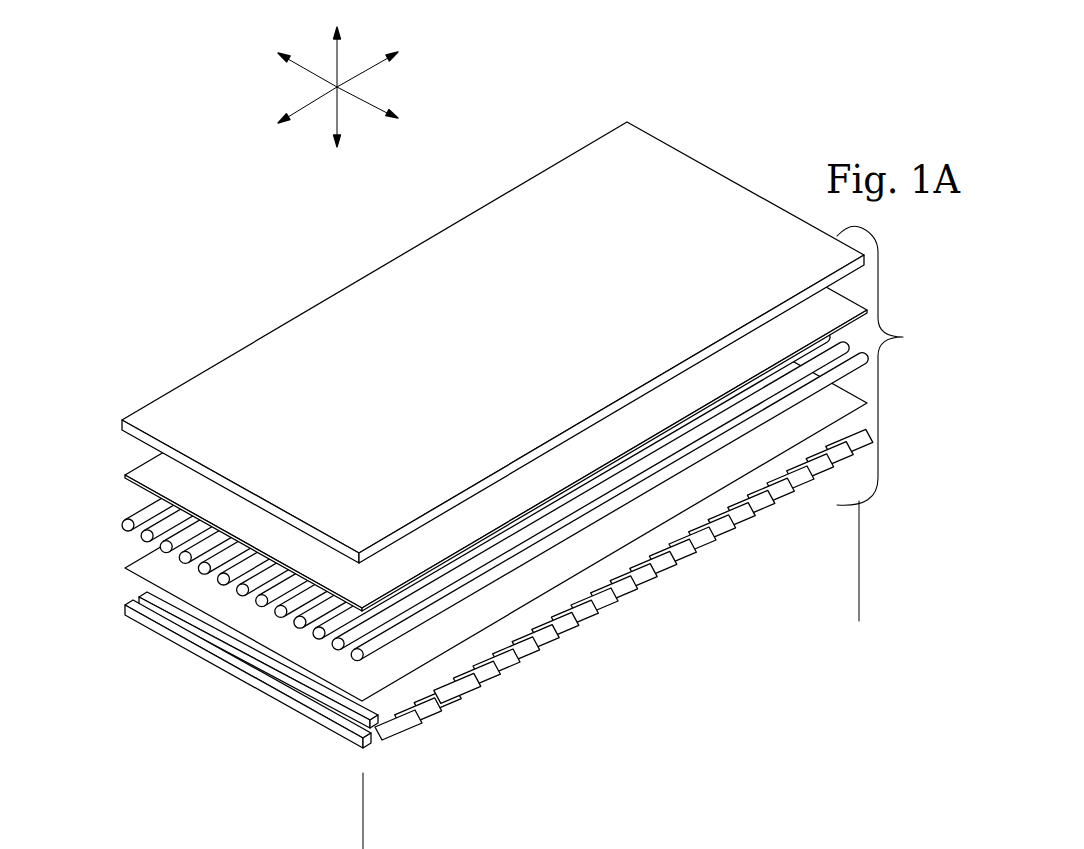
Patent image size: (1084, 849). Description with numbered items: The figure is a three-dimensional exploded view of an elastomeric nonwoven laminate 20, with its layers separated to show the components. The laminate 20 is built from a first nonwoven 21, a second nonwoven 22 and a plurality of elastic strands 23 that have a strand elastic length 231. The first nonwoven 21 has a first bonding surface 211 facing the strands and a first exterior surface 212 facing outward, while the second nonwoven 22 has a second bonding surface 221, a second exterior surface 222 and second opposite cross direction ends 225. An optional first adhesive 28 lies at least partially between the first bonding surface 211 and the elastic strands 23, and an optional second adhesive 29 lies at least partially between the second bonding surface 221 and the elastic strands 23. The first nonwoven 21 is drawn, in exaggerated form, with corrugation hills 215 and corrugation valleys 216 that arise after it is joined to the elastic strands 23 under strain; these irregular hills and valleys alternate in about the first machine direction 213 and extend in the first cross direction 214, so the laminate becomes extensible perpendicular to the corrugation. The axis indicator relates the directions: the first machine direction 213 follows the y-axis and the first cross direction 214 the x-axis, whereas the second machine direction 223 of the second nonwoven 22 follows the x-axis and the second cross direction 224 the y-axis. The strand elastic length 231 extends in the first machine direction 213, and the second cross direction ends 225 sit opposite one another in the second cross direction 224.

The elastomeric nonwoven laminate 20 is at (311, 215).
The first nonwoven 21 is at (246, 702).
The first bonding surface 211 is at (624, 602).
The first exterior surface 212 is at (411, 735).
The first machine direction 213 is at (392, 56).
The first cross direction 214 is at (392, 112).
The corrugation hills 215 is at (335, 713).
The corrugation valleys 216 is at (381, 742).
The second nonwoven 22 is at (493, 330).
The second bonding surface 221 is at (178, 463).
The second exterior surface 222 is at (330, 321).
The second machine direction 223 is at (392, 112).
The second cross direction 224 is at (392, 56).
The second opposite cross direction ends 225 is at (222, 472).
The elastic strands 23 is at (190, 548).
The first adhesive 28 is at (466, 523).
The second adhesive 29 is at (127, 449).
The strand elastic length 231 is at (848, 599).